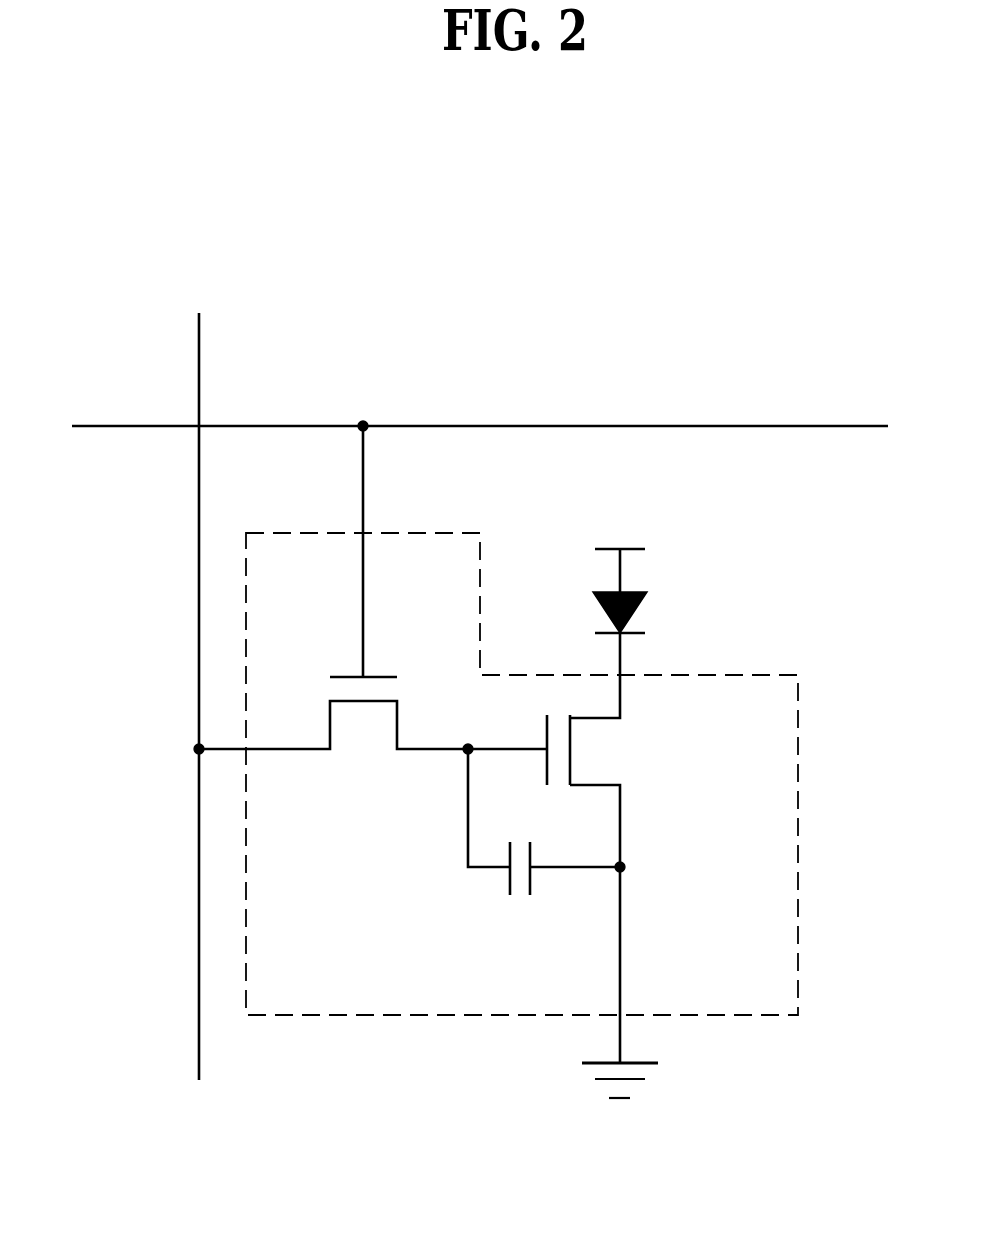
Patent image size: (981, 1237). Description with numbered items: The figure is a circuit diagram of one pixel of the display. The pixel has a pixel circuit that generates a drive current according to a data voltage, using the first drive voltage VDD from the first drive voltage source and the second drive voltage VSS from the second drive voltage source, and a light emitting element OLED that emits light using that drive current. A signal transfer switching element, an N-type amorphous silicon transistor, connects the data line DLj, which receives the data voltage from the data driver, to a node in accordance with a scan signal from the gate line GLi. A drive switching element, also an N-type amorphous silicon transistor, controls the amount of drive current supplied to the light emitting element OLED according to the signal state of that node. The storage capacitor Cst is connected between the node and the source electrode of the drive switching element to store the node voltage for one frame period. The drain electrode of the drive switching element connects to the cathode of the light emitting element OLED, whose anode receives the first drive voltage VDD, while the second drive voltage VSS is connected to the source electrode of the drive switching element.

The gate line GLi is at (600, 426).
The data line DLj is at (199, 826).
The storage capacitor Cst is at (546, 844).
The first drive voltage VDD is at (619, 547).
The light emitting element OLED is at (638, 605).
The second drive voltage VSS is at (620, 1108).